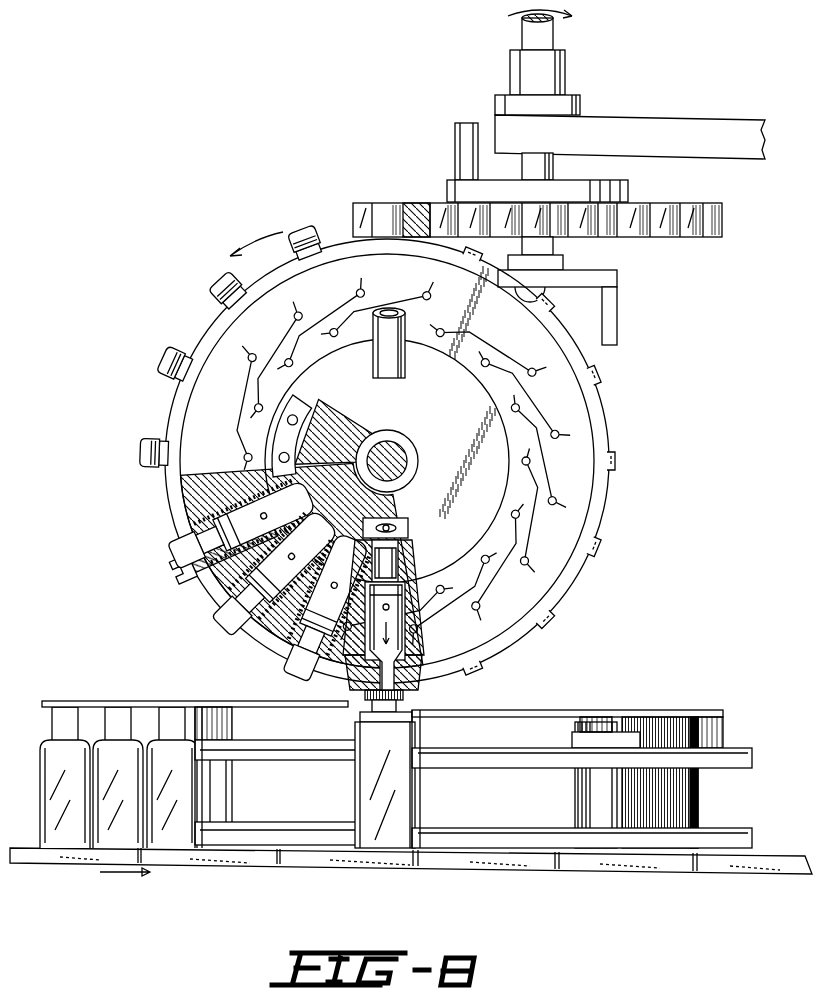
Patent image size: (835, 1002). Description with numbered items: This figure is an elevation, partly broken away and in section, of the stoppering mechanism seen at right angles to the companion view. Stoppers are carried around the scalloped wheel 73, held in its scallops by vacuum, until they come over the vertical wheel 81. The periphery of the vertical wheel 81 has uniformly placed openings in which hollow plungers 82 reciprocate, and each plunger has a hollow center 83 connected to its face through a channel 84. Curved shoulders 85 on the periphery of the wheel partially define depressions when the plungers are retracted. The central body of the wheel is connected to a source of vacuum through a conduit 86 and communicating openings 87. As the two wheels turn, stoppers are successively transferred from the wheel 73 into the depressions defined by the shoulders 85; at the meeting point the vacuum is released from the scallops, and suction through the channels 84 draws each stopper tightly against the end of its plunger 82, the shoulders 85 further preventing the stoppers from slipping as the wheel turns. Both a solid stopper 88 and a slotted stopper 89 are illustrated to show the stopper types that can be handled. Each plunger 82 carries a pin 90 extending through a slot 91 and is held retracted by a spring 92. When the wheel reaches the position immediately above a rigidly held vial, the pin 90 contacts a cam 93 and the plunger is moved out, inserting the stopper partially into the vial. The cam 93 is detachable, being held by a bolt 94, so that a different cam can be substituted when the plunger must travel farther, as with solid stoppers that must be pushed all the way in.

The wheel 73 is at (658, 205).
The vertical wheel 81 is at (180, 410).
The hollow plunger 82 is at (218, 600).
The hollow center 83 is at (241, 525).
The channel 84 is at (176, 518).
The shoulder 85 is at (190, 347).
The conduit 86 is at (404, 355).
The communicating opening 87 is at (300, 410).
The solid stopper 88 is at (222, 285).
The slotted stopper 89 is at (304, 228).
The pin 90 is at (293, 360).
The slot 91 is at (262, 400).
The spring 92 is at (240, 438).
The cam 93 is at (418, 545).
The bolt 94 is at (392, 528).